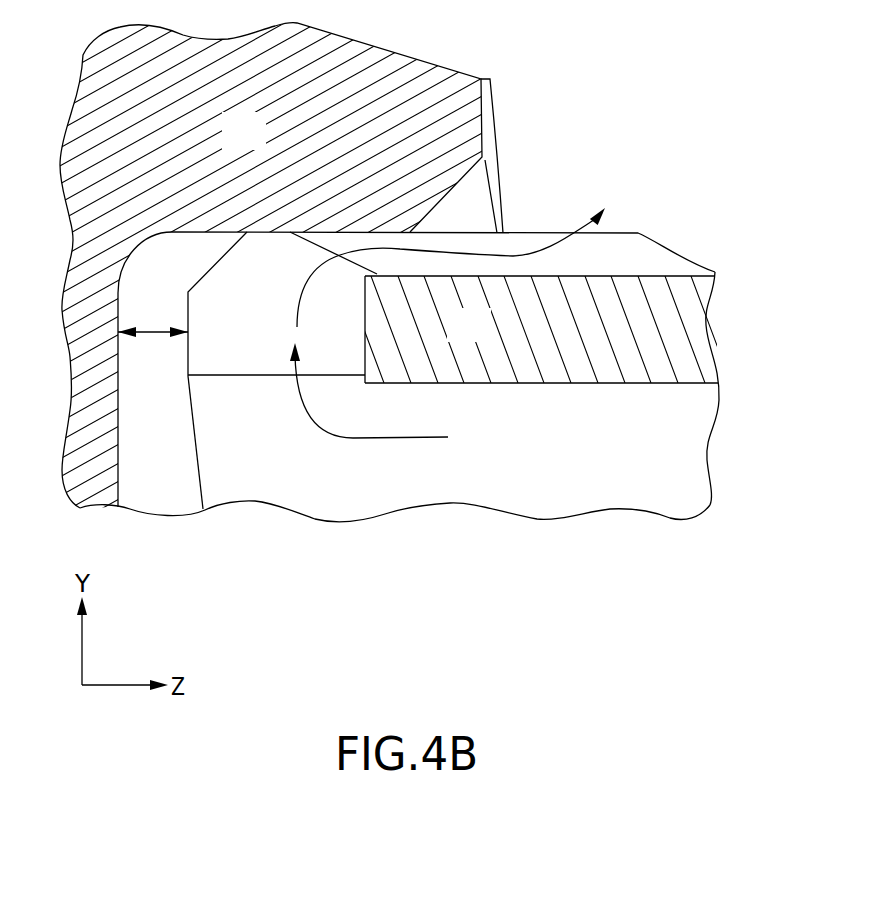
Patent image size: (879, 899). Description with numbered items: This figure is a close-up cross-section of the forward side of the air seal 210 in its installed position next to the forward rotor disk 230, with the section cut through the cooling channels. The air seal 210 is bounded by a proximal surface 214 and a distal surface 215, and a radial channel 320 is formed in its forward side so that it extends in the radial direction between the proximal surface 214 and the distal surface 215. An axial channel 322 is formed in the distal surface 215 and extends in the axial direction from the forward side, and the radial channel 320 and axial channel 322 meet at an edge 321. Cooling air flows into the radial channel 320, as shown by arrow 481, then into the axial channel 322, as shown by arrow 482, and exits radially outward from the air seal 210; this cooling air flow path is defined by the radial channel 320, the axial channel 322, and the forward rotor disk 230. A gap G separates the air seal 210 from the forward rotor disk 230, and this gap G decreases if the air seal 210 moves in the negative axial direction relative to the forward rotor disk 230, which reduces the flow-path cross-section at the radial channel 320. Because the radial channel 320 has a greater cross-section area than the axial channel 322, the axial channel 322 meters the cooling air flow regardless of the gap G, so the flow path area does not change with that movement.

The air seal 210 is at (485, 338).
The proximal surface 214 is at (579, 495).
The distal surface 215 is at (624, 236).
The forward rotor disk 230 is at (260, 146).
The radial channel 320 is at (269, 332).
The edge 321 is at (337, 250).
The axial channel 322 is at (624, 267).
The arrow 481 is at (353, 438).
The arrow 482 is at (515, 257).
The gap G is at (147, 337).